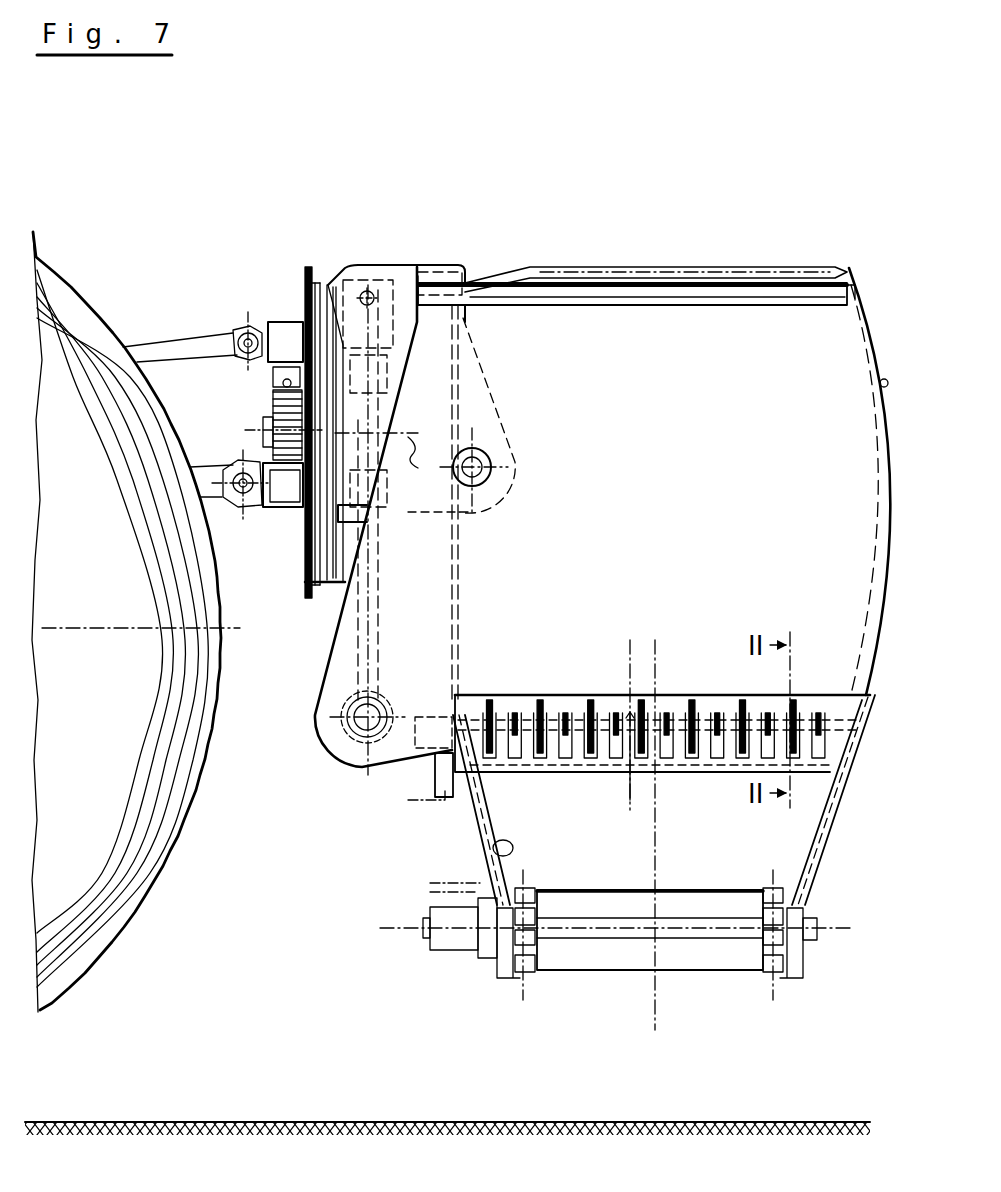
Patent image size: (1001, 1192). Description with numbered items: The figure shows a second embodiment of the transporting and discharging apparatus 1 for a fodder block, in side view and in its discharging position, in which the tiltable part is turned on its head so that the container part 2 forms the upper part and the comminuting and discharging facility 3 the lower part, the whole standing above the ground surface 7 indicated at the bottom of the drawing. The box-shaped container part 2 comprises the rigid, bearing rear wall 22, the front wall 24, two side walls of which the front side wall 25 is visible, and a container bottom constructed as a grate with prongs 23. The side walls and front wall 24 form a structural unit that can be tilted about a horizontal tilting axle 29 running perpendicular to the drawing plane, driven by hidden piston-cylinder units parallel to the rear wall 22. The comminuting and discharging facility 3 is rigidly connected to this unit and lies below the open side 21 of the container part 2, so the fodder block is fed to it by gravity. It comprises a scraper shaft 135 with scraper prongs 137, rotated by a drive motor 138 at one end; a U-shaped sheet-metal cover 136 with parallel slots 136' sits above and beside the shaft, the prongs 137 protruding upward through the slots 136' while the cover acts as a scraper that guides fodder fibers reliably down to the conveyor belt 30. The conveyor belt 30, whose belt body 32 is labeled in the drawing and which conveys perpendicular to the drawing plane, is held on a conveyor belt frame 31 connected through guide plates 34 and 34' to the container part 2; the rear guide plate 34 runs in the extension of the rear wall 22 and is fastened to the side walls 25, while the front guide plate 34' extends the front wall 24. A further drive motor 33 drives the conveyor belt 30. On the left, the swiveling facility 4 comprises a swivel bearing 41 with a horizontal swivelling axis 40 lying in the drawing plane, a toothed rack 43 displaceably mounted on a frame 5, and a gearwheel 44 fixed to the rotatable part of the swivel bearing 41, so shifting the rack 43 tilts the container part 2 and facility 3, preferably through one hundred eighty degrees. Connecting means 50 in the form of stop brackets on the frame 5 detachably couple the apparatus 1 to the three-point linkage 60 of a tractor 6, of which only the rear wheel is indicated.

The transporting and discharging apparatus 1 is at (405, 258).
The container part 2 is at (851, 262).
The comminuting and discharging facility 3 is at (470, 830).
The swiveling facility 4 is at (299, 520).
The frame 5 is at (275, 325).
The tractor 6 is at (54, 252).
The ground 7 is at (348, 1120).
The open side 21 is at (662, 730).
The rear wall 22 is at (505, 597).
The prongs 23 is at (628, 268).
The front wall 24 is at (880, 385).
The side wall 25 is at (725, 521).
The tilting axle 29 is at (490, 458).
The conveyor belt 30 is at (560, 888).
The conveyor belt frame 31 is at (493, 975).
The roller body 32 is at (745, 856).
The drive motor 33 is at (445, 945).
The guide plate 34 is at (463, 866).
The front guide plate 34' is at (766, 828).
The swivelling axis 40 is at (421, 467).
The swivel bearing 41 is at (320, 330).
The toothed rack 43 is at (272, 391).
The gearwheel 44 is at (272, 422).
The connecting means 50 is at (245, 330).
The three-point linkage 60 is at (152, 346).
The scraper shaft 135 is at (529, 716).
The cover 136 is at (580, 698).
The slots 136' is at (633, 698).
The scraper prongs 137 is at (655, 712).
The drive motor 138 is at (443, 770).